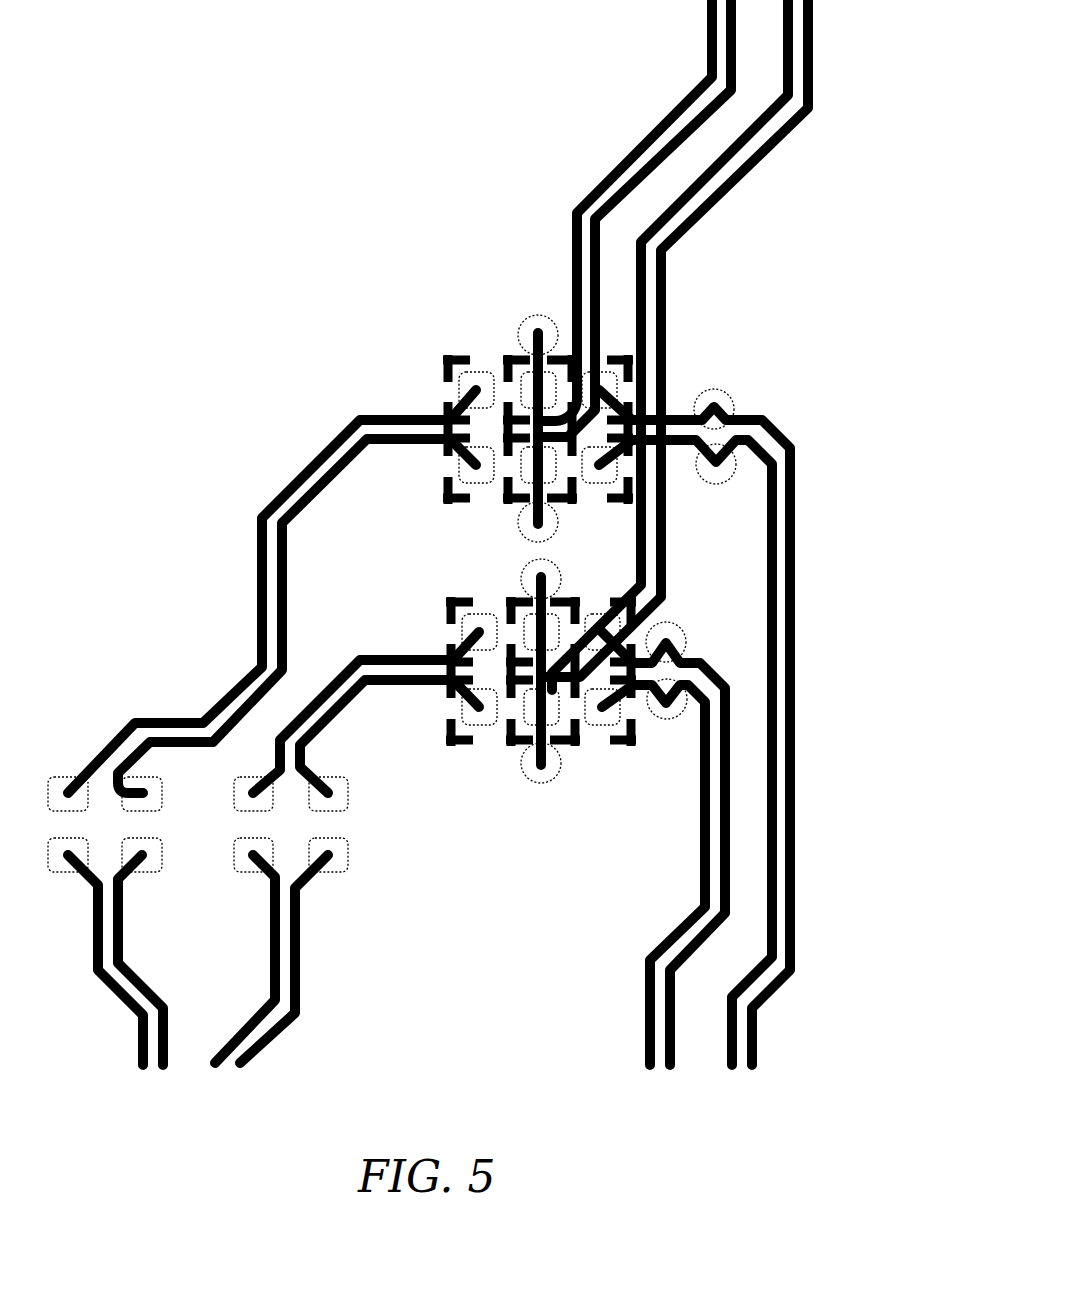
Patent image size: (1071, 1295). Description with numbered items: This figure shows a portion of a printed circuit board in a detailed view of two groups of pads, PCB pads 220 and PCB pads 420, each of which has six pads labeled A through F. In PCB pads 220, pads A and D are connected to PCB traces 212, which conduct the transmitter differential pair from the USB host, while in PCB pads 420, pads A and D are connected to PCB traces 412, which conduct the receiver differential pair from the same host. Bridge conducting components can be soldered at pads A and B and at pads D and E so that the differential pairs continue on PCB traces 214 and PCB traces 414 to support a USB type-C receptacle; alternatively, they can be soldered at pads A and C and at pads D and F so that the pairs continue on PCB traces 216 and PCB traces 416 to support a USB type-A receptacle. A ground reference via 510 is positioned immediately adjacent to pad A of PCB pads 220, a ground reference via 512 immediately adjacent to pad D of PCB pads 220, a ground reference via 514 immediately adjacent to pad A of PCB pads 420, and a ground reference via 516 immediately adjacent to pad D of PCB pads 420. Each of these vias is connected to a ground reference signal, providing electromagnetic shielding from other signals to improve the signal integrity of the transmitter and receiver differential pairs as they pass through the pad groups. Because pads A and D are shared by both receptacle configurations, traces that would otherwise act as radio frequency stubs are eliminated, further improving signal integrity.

The PCB traces 212 is at (668, 122).
The PCB traces 412 is at (757, 138).
The PCB traces 216 is at (775, 770).
The PCB traces 416 is at (713, 840).
The PCB traces 214 is at (318, 482).
The PCB traces 414 is at (320, 713).
The PCB pads 220 is at (432, 370).
The PCB pads 420 is at (437, 597).
The ground reference via 510 is at (527, 322).
The ground reference via 512 is at (557, 520).
The ground reference via 514 is at (532, 580).
The ground reference via 516 is at (553, 770).